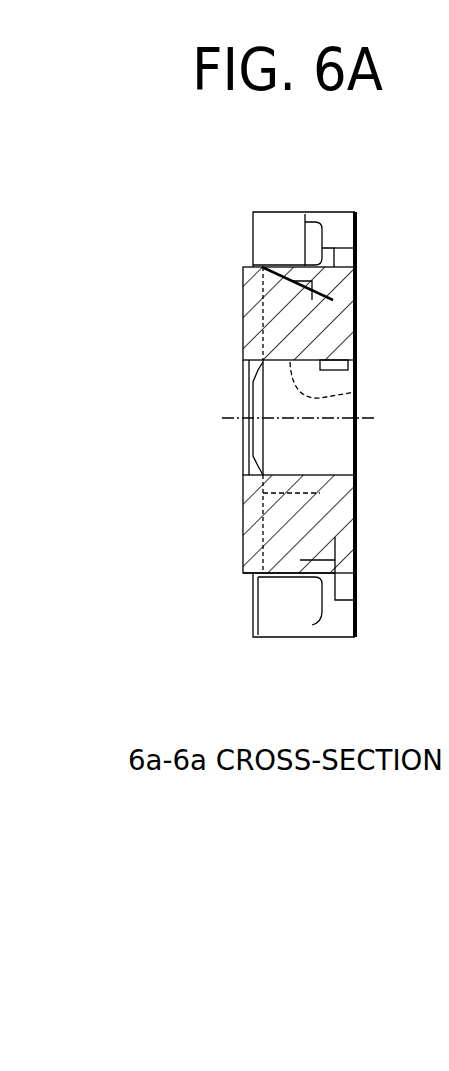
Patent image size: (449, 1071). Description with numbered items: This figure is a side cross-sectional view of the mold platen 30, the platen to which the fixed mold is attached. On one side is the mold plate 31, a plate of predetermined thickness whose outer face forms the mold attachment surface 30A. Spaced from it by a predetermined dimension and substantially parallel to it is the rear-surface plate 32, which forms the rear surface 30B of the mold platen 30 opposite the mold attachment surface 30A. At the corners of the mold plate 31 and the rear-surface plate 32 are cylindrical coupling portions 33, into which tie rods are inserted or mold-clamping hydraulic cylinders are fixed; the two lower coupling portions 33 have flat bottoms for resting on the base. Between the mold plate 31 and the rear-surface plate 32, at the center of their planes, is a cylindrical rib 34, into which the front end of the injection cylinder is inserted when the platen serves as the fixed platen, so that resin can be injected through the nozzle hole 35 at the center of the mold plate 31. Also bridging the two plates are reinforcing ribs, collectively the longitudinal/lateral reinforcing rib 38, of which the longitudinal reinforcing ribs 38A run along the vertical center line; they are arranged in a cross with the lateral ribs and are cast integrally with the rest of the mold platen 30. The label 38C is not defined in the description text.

The mold platen 30 is at (279, 192).
The mold attachment surface 30A is at (245, 372).
The rear surface 30B is at (360, 262).
The mold plate 31 is at (245, 330).
The rear-surface plate 32 is at (360, 328).
The coupling portion 33 is at (258, 228).
The cylindrical rib 34 is at (360, 361).
The nozzle hole 35 is at (243, 406).
The longitudinal/lateral reinforcing rib 38 is at (303, 212).
The longitudinal reinforcing rib 38A is at (243, 270).
The seal groove 38C is at (340, 300).